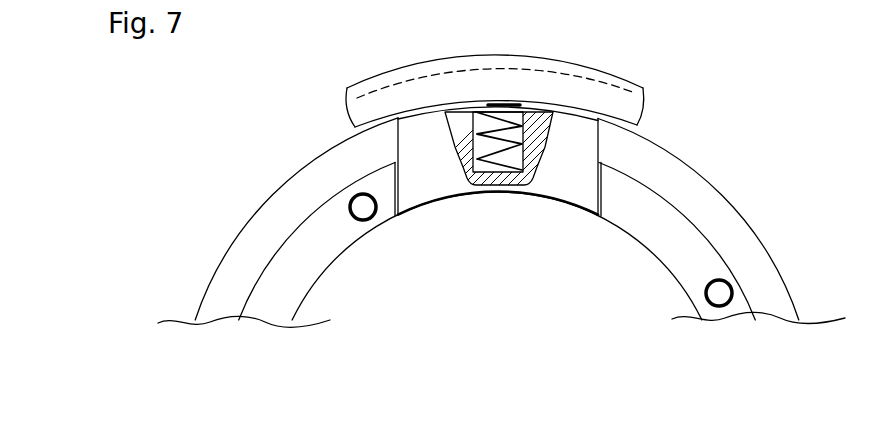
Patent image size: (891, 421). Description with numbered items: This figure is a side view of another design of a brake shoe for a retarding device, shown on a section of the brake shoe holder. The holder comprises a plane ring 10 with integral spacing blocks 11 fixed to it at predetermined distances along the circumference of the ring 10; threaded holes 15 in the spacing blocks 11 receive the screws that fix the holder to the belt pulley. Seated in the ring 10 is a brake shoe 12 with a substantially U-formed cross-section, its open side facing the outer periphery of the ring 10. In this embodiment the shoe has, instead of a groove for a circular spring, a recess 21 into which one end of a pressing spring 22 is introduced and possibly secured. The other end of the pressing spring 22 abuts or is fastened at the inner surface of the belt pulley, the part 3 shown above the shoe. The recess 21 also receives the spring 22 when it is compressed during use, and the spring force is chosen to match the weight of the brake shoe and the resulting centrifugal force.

The plate 3 is at (573, 82).
The plane ring 10 is at (657, 144).
The spacing block 11 is at (668, 242).
The brake shoe 12 is at (473, 193).
The threaded hole 15 is at (728, 290).
The recess 21 is at (453, 130).
The pressing spring 22 is at (517, 138).